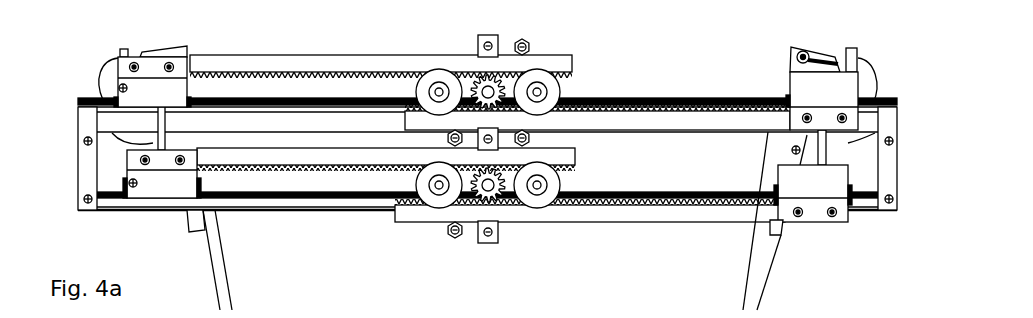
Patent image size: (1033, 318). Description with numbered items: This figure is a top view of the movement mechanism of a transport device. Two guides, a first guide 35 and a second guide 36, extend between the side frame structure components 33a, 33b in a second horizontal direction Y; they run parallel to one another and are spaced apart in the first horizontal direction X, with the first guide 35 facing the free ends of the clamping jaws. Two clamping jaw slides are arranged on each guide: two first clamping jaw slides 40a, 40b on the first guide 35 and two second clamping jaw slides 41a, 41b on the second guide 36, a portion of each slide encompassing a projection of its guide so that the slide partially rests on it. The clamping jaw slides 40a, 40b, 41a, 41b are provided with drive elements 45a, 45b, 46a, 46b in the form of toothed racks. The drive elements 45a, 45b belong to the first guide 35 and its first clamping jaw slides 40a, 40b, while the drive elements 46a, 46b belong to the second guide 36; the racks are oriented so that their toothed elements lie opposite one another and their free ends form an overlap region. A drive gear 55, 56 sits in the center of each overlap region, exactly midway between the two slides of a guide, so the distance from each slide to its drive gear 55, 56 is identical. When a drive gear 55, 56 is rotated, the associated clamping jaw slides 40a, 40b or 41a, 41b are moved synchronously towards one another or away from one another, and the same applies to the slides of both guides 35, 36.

The side frame structure component 33a is at (85, 153).
The side frame structure component 33b is at (889, 143).
The first guide 35 is at (328, 192).
The second guide 36 is at (242, 106).
The first clamping jaw slide 40a is at (167, 170).
The first clamping jaw slide 40b is at (820, 168).
The second clamping jaw slide 41a is at (150, 60).
The second clamping jaw slide 41b is at (790, 58).
The drive element 45a is at (227, 153).
The drive element 45b is at (662, 203).
The drive element 46a is at (345, 67).
The drive element 46b is at (728, 105).
The drive gear 55 is at (492, 172).
The drive gear 56 is at (563, 72).